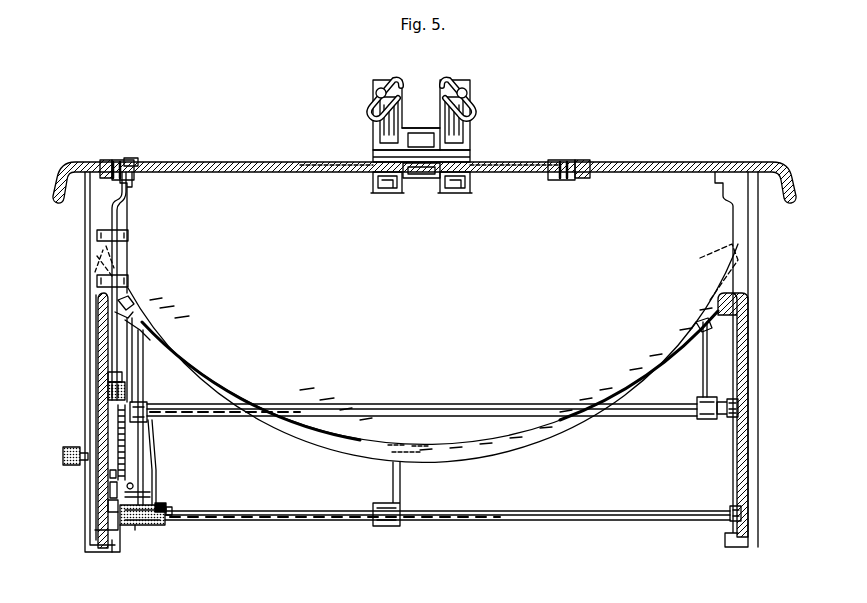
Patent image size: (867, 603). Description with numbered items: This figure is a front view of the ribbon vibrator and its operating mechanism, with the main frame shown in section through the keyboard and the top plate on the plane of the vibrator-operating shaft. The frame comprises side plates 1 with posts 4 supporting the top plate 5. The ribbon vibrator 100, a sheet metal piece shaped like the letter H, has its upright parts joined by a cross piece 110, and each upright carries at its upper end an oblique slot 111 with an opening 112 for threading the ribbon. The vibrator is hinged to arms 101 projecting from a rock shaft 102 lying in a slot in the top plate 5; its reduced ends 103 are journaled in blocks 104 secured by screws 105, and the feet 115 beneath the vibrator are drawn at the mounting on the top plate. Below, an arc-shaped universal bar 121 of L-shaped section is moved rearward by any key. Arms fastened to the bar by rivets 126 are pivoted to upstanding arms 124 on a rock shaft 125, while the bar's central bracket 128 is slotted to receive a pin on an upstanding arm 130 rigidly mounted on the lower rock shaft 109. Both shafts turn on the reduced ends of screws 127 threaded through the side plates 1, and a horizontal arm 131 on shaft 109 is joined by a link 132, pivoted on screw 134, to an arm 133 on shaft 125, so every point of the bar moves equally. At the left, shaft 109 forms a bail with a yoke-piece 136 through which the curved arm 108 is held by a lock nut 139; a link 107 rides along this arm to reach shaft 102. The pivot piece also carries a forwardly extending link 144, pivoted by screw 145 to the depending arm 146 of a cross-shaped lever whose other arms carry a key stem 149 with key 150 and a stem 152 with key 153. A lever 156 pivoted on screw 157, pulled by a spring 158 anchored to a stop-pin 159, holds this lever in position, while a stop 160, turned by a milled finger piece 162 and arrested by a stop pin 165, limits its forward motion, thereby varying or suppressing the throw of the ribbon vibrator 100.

The top plate 5 is at (652, 163).
The rock shaft 102 is at (510, 163).
The reduced ends 103 is at (125, 161).
The blocks 104 is at (103, 162).
The screws 105 is at (115, 160).
The posts 4 is at (87, 216).
The side plates 1 is at (98, 342).
The stem 152 is at (103, 312).
The link 107 is at (119, 266).
The key 150 is at (129, 236).
The key stem 149 is at (118, 252).
The key 153 is at (129, 283).
The universal bar 121 is at (529, 448).
The arm or bracket 128 is at (422, 447).
The rock shaft 125 is at (420, 404).
The arm 133 is at (141, 402).
The screws 127 is at (723, 420).
The upstanding arm 124 is at (133, 378).
The rivets 126 is at (125, 334).
The lever 156 is at (109, 382).
The screw 157 is at (109, 392).
The spring 158 is at (126, 448).
The stop-pin 159 is at (128, 478).
The link 132 is at (153, 482).
The milled head or finger piece 162 is at (66, 446).
The stop 160 is at (111, 474).
The stop pin 165 is at (111, 490).
The depending arm 146 is at (110, 506).
The link 144 is at (100, 530).
The yoke-piece 136 is at (113, 553).
The lock nut 139 is at (136, 530).
The arm 108 is at (145, 527).
The arm 131 is at (163, 513).
The screw 134 is at (174, 514).
The screw 145 is at (152, 495).
The rock shaft 109 is at (641, 519).
The upstanding arm 130 is at (401, 489).
The ribbon vibrator 100 is at (405, 80).
The oblique slot 111 is at (462, 96).
The opening 112 is at (384, 85).
The cross piece 110 is at (420, 130).
The arm 101 is at (421, 178).
The foot 115 is at (373, 190).